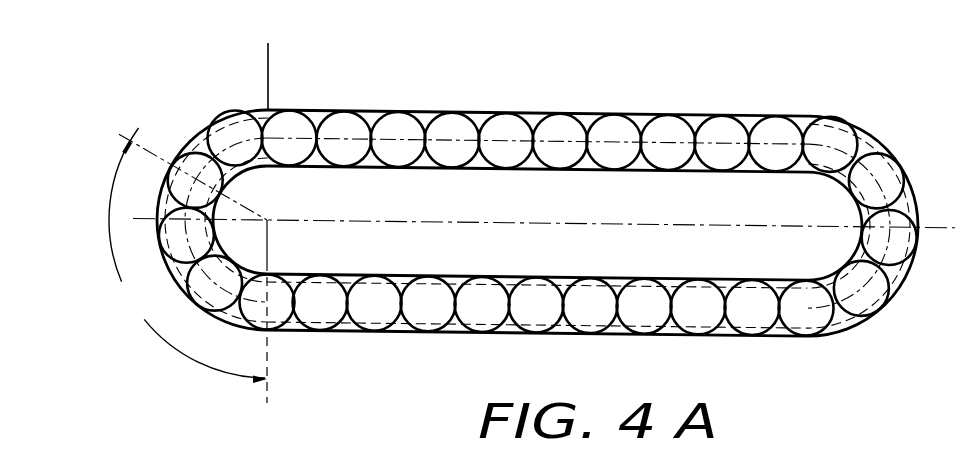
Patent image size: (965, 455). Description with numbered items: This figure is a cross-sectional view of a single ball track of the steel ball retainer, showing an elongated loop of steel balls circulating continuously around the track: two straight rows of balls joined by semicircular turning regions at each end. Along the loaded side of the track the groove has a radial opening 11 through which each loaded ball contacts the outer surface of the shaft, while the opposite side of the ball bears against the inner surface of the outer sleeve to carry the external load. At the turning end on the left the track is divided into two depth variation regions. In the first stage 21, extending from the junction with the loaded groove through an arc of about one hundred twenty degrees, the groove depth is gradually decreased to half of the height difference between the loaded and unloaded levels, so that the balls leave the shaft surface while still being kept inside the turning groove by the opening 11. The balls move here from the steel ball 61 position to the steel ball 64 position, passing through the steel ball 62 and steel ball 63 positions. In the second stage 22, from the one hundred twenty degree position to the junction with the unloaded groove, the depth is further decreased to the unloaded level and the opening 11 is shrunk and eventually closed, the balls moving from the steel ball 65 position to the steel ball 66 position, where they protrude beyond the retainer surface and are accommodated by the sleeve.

The opening 11 is at (222, 262).
The first stage depth variation region 21 is at (188, 255).
The second stage depth variation 22 is at (264, 57).
The steel ball position 61 is at (277, 332).
The steel ball position 62 is at (197, 305).
The steel ball position 63 is at (162, 240).
The steel ball position 64 is at (166, 188).
The steel ball position 65 is at (206, 134).
The steel ball position 66 is at (288, 116).